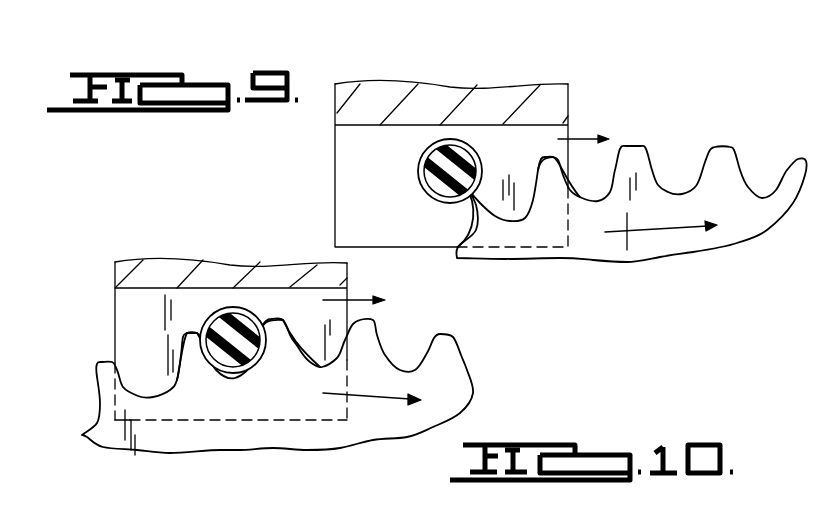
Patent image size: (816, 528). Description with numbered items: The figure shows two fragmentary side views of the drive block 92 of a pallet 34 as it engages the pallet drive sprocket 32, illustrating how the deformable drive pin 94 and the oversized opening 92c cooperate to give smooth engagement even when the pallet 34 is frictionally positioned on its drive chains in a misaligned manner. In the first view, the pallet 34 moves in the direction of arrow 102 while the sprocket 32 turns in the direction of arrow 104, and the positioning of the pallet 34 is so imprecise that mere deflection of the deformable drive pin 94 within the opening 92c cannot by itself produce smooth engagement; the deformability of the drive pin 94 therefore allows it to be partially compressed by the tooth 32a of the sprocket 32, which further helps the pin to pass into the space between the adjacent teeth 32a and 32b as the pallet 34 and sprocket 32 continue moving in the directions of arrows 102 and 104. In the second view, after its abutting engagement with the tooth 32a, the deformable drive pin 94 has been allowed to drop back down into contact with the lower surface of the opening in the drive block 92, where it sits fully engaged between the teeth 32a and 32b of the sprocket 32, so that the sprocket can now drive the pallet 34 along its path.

In FIG. 9, the pallet drive sprocket 32 is at (599, 199).
In FIG. 10, the pallet drive sprocket 32 is at (261, 375).
In FIG. 9, the tooth 32a is at (467, 187).
In FIG. 10, the tooth 32a is at (190, 348).
In FIG. 9, the tooth 32b is at (523, 188).
In FIG. 10, the tooth 32b is at (278, 340).
In FIG. 9, the pallet 34 is at (505, 72).
In FIG. 10, the pallet 34 is at (92, 278).
In FIG. 9, the drive block 92 is at (375, 222).
In FIG. 10, the drive block 92 is at (153, 323).
In FIG. 9, the opening 92c is at (432, 195).
In FIG. 10, the opening 92c is at (233, 311).
In FIG. 9, the deformable drive pin 94 is at (425, 173).
In FIG. 10, the deformable drive pin 94 is at (232, 305).
In FIG. 9, the arrow 102 is at (573, 137).
In FIG. 10, the arrow 102 is at (357, 300).
In FIG. 9, the arrow 104 is at (648, 230).
In FIG. 10, the arrow 104 is at (375, 394).